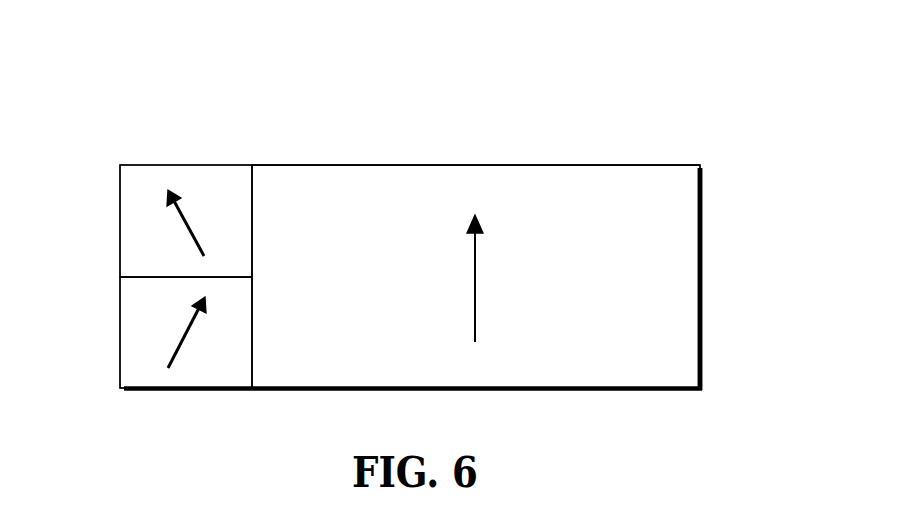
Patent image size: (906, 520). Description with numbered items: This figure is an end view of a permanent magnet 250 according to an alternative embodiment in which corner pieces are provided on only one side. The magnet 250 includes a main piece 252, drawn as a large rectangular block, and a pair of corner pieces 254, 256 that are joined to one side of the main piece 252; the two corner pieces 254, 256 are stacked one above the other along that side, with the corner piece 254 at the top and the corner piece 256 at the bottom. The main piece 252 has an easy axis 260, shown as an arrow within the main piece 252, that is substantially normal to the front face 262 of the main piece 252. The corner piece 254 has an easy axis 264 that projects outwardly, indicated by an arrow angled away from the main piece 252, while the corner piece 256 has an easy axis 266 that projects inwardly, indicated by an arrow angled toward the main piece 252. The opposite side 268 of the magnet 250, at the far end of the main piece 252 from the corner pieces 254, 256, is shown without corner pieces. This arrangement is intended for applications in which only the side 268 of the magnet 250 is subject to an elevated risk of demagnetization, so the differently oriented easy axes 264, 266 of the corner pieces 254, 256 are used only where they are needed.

The magnet 250 is at (183, 90).
The main piece 252 is at (579, 177).
The corner piece 254 is at (185, 167).
The corner piece 256 is at (187, 380).
The easy axis 260 is at (478, 277).
The front face 262 is at (475, 165).
The easy axis 264 is at (201, 243).
The easy axis 266 is at (170, 352).
The side 268 is at (703, 222).